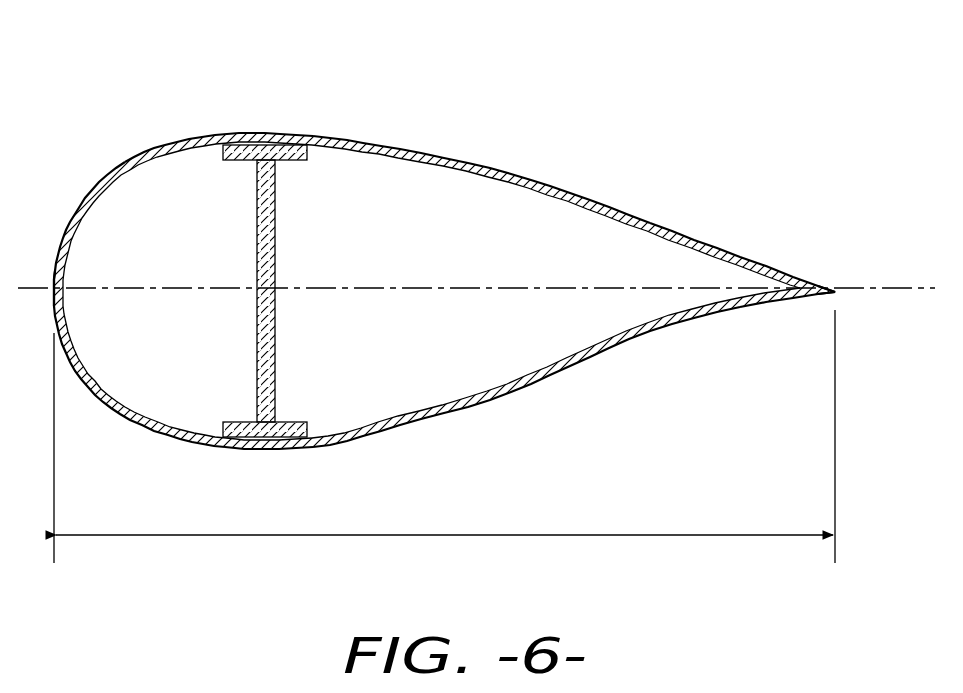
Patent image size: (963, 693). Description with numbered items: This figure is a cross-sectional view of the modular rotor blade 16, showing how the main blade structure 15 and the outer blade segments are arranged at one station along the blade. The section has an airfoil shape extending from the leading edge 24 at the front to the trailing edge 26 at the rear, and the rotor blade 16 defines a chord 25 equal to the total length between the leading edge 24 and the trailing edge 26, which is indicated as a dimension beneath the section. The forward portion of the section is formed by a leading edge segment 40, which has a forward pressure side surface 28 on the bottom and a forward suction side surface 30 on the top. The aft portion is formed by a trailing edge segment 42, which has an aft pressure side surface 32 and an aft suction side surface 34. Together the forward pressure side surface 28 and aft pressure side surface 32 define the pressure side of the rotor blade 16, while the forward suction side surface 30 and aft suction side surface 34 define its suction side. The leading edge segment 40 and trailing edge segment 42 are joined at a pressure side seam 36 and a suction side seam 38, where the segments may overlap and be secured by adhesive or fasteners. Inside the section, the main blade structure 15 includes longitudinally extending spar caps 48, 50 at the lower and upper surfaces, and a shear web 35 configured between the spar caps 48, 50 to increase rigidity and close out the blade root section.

The rotor blade 16 is at (708, 92).
The main blade structure 15 is at (272, 291).
The leading edge 24 is at (52, 287).
The trailing edge 26 is at (836, 289).
The forward pressure side surface 28 is at (143, 418).
The forward suction side surface 30 is at (142, 160).
The aft pressure side surface 32 is at (515, 375).
The aft suction side surface 34 is at (530, 176).
The pressure side seam 36 is at (256, 449).
The suction side seam 38 is at (288, 133).
The leading edge segment 40 is at (74, 205).
The trailing edge segment 42 is at (660, 220).
The shear web 35 is at (257, 258).
The spar cap 48 is at (286, 430).
The spar cap 50 is at (282, 163).
The chord 25 is at (575, 537).